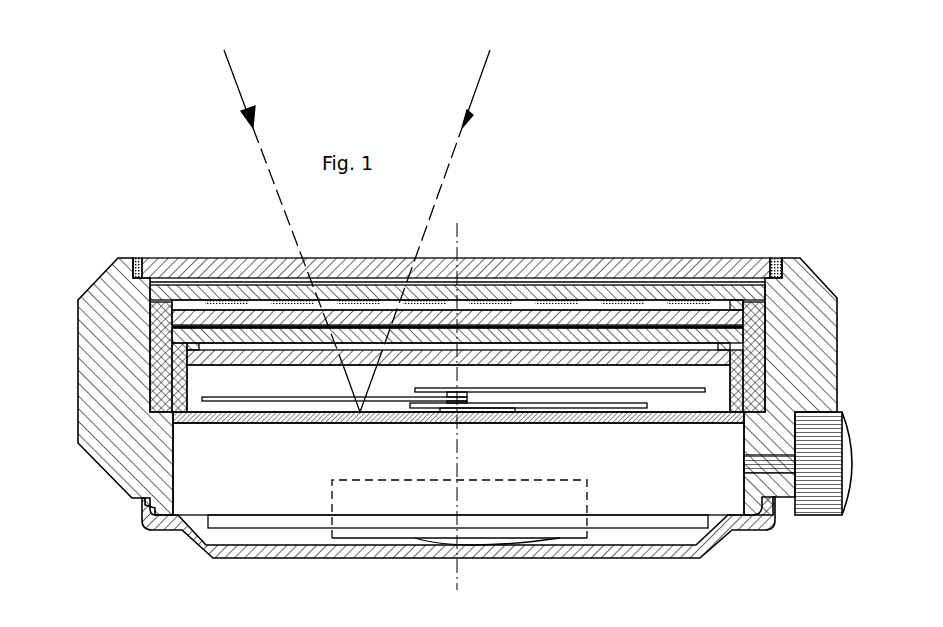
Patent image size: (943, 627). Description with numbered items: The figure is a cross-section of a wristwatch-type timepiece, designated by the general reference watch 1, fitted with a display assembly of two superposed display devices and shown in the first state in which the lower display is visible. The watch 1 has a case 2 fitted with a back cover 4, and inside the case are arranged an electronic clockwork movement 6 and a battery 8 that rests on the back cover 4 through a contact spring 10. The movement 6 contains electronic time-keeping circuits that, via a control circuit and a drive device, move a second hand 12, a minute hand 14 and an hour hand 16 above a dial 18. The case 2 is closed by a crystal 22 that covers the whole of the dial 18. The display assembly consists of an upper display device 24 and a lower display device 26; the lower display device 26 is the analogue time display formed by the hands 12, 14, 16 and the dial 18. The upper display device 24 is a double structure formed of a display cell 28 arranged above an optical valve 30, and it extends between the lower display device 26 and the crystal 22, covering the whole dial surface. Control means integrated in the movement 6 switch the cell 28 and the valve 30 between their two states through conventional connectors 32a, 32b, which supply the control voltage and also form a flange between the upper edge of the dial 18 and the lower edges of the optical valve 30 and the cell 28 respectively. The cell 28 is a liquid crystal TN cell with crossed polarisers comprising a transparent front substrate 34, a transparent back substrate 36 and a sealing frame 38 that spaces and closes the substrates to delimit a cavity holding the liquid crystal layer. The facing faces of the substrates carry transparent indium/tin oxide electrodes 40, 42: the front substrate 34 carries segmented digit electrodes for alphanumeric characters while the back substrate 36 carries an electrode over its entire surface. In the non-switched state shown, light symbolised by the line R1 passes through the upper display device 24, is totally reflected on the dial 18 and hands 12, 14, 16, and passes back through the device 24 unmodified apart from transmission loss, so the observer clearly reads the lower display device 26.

The watch 1 is at (140, 237).
The case 2 is at (120, 400).
The back cover 4 is at (552, 556).
The electronic clockwork movement 6 is at (660, 490).
The battery 8 is at (367, 512).
The contact spring 10 is at (425, 543).
The second hand 12 is at (572, 392).
The minute hand 14 is at (540, 403).
The hour hand 16 is at (620, 412).
The dial 18 is at (545, 462).
The crystal 22 is at (518, 258).
The upper display device 24 is at (457, 263).
The lower display device 26 is at (458, 443).
The display cell 28 is at (457, 262).
The optical valve 30 is at (203, 336).
The connector 32a is at (745, 392).
The connector 32b is at (185, 392).
The transparent front substrate 34 is at (563, 270).
The transparent back substrate 36 is at (693, 318).
The sealing frame 38 is at (743, 318).
The transparent electrode 40 is at (615, 302).
The transparent electrode 42 is at (660, 310).
The light ray R1 is at (357, 231).